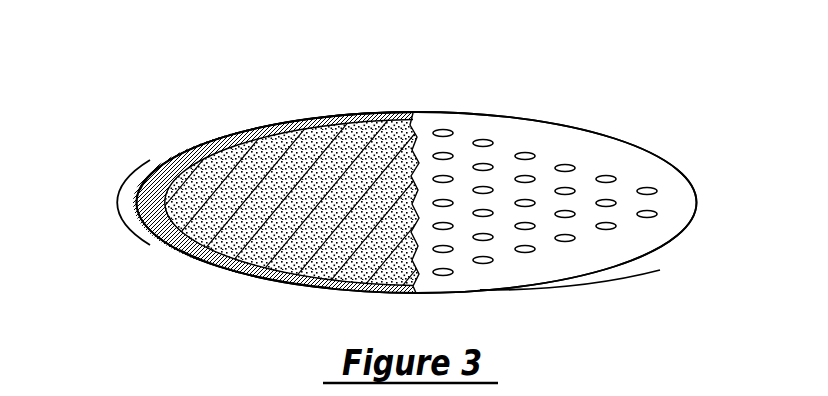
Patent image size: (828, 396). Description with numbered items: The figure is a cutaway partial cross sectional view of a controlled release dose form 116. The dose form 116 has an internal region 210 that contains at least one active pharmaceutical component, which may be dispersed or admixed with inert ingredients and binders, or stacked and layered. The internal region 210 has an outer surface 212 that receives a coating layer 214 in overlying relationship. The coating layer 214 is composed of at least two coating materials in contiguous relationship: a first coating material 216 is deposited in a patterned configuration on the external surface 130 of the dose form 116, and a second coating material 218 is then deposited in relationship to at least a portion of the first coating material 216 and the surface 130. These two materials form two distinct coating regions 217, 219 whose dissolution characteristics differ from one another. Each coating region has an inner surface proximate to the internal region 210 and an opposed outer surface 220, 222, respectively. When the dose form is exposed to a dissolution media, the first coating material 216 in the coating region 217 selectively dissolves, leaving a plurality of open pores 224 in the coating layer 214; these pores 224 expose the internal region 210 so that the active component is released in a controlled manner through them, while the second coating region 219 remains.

The dose form 116 is at (569, 107).
The external surface 130 is at (140, 192).
The internal region 210 is at (403, 114).
The outer surface 212 is at (333, 118).
The coating layer 214 is at (203, 129).
The first coating material 216 is at (271, 280).
The coating region 217 is at (647, 188).
The second coating material 218 is at (218, 267).
The coating region 219 is at (592, 253).
The outer surface 220 is at (364, 114).
The outer surface 222 is at (295, 120).
The pores 224 is at (483, 263).